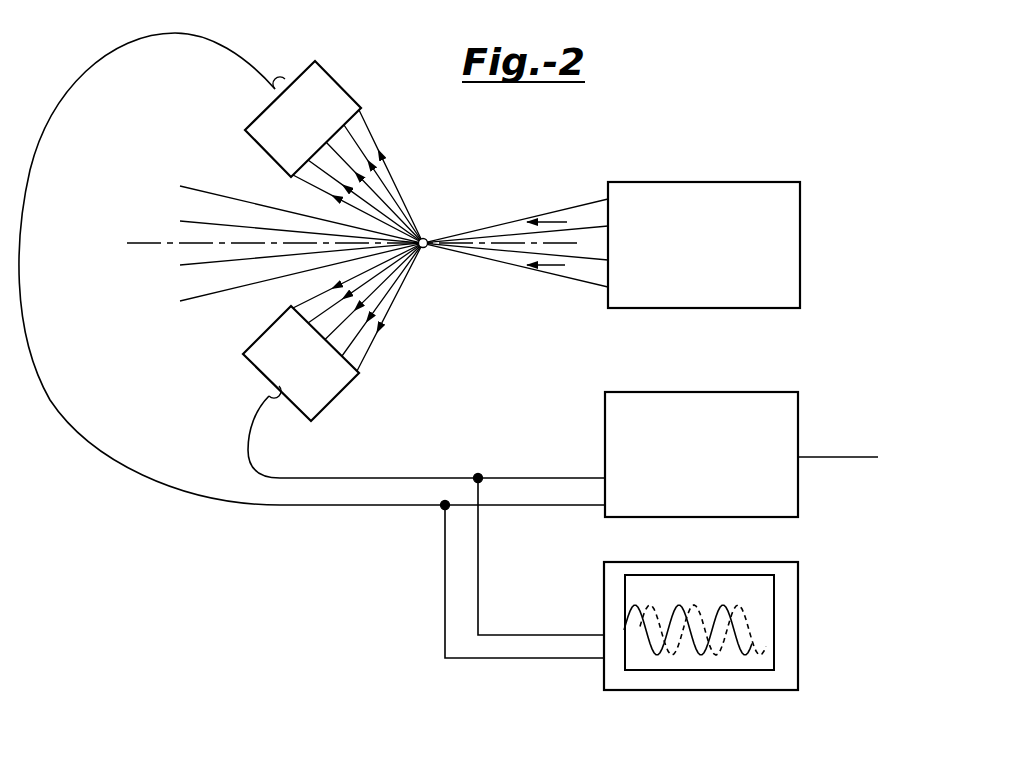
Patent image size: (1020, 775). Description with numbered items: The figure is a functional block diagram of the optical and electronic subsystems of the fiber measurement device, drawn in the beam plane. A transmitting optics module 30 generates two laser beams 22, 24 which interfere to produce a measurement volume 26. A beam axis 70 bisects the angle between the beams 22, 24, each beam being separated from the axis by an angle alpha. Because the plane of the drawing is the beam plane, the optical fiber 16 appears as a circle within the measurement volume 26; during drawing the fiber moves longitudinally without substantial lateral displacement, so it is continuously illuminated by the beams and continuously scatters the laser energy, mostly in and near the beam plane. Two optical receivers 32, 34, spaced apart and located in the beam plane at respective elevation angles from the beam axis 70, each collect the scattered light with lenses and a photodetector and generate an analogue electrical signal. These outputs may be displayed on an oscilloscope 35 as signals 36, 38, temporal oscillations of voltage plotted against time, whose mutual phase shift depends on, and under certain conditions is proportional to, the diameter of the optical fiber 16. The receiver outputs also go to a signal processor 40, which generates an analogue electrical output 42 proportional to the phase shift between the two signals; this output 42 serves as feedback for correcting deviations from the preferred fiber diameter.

The optical fiber 16 is at (425, 238).
The laser beam 22 is at (585, 197).
The laser beam 24 is at (498, 258).
The measurement volume 26 is at (434, 244).
The transmitting optics module 30 is at (706, 182).
The optical receiver 32 is at (343, 82).
The optical receiver 34 is at (337, 400).
The oscilloscope 35 is at (798, 627).
The signal 36 is at (675, 610).
The signal 38 is at (702, 618).
The signal processor 40 is at (695, 392).
The output 42 is at (817, 455).
The beam axis 70 is at (577, 247).